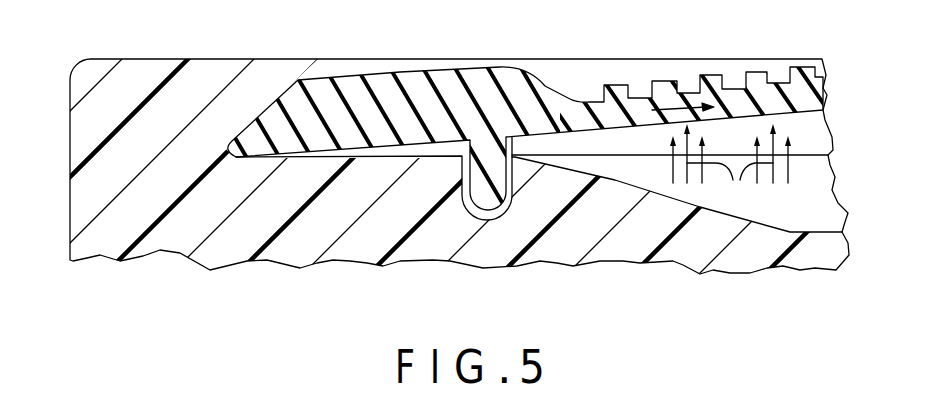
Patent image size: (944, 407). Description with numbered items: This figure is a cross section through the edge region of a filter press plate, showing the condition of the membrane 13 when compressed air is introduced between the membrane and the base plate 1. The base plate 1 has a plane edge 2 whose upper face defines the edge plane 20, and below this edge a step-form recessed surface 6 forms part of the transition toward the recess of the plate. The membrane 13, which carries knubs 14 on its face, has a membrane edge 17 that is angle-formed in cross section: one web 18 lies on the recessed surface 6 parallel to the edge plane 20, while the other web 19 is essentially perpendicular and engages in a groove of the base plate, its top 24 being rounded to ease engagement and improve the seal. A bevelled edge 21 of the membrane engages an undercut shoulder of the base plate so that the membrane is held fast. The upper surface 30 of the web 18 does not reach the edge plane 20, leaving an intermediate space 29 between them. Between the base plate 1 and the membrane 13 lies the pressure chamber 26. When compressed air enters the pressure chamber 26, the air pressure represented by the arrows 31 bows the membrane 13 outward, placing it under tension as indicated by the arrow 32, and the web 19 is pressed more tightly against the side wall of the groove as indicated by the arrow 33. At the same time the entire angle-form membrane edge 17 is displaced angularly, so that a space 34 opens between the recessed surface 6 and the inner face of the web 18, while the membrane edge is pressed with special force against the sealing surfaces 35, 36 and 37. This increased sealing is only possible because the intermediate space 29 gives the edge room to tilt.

The base plate 1 is at (816, 250).
The plane edge 2 is at (131, 57).
The step-form recessed surface 6 is at (358, 122).
The membrane 13 is at (633, 103).
The knubs 14 is at (762, 65).
The membrane edge 17 is at (487, 123).
The web 18 is at (346, 140).
The web 19 is at (498, 198).
The edge plane 20 is at (546, 58).
The bevelled edge 21 is at (231, 150).
The top of the web 24 is at (480, 220).
The pressure chamber 26 is at (850, 190).
The intermediate space 29 is at (323, 72).
The upper surface of the web 30 is at (400, 70).
The arrows representing air pressure 31 is at (730, 168).
The arrow indicating tension 32 is at (690, 103).
The arrow indicating pressing of the web 33 is at (500, 174).
The space 34 is at (407, 145).
The sealing surface 35 is at (514, 164).
The sealing surface 36 is at (250, 156).
The sealing surface 37 is at (278, 66).